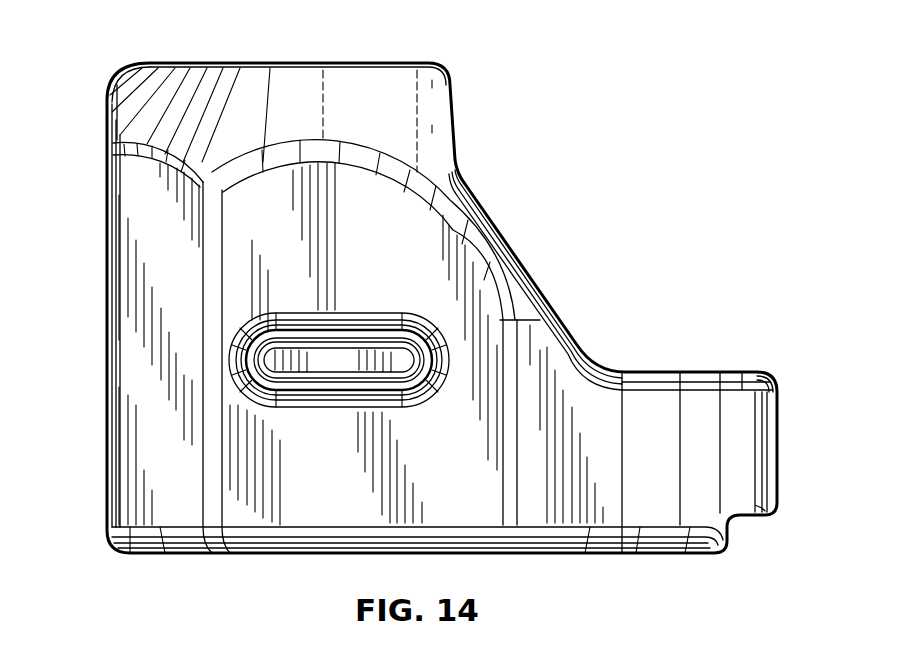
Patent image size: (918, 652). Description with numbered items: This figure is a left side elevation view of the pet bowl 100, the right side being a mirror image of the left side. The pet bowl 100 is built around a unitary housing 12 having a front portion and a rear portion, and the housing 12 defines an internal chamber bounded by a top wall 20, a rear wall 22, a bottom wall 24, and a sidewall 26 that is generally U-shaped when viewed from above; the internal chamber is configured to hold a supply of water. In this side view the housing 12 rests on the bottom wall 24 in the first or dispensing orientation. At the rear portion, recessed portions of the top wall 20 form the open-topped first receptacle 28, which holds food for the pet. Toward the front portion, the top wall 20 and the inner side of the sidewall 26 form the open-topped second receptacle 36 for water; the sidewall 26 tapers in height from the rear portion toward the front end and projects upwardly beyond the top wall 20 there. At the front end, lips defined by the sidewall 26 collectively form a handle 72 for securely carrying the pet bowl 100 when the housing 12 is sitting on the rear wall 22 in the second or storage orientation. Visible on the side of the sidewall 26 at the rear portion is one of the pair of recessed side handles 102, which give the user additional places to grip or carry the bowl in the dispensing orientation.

The pet bowl 100 is at (641, 158).
The housing 12 is at (133, 374).
The top wall 20 is at (229, 70).
The rear wall 22 is at (108, 252).
The bottom wall 24 is at (300, 556).
The sidewall 26 is at (505, 250).
The first receptacle 28 is at (373, 60).
The second receptacle 36 is at (657, 368).
The handle 72 is at (787, 458).
The recessed side handles 102 is at (340, 352).